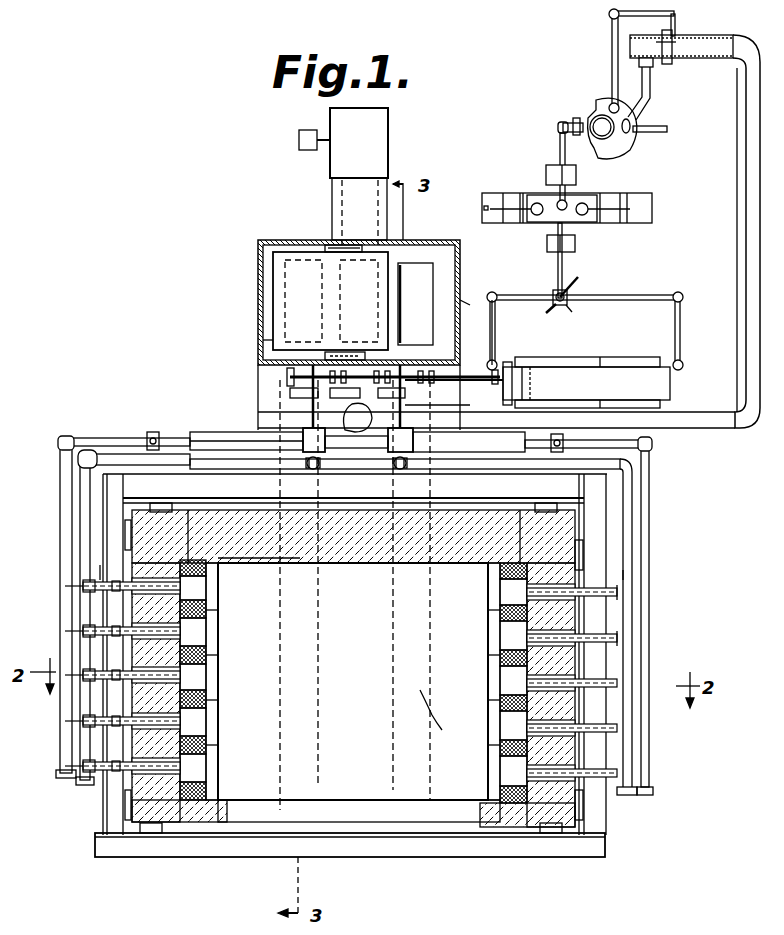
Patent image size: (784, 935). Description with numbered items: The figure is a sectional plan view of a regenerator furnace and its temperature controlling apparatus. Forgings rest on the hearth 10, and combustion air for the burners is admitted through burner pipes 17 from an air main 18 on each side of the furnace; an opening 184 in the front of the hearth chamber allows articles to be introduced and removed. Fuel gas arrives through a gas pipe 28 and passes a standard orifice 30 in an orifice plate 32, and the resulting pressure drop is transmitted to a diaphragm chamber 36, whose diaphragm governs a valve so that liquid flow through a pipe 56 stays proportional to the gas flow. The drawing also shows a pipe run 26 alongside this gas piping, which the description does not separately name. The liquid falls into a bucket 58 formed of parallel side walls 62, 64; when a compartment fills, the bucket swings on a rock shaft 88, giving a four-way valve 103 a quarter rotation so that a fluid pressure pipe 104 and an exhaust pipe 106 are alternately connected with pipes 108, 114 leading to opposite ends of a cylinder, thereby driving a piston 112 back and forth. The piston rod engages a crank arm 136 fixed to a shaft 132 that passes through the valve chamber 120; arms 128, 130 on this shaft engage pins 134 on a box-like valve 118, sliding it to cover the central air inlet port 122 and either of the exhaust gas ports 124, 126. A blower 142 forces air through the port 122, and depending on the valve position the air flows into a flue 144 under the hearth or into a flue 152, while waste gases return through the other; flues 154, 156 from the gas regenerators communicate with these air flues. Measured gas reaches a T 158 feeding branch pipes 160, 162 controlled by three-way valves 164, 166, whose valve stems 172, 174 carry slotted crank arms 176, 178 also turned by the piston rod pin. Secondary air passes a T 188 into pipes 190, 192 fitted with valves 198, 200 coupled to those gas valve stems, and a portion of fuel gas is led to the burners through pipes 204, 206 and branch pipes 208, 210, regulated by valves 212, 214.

The hearth 10 is at (350, 797).
The burner pipes 17 is at (585, 592).
The air main 18 is at (82, 553).
The fuel supply pipe 26 is at (712, 425).
The gas pipe 28 is at (612, 48).
The standard orifice 30 is at (665, 64).
The orifice plate 32 is at (668, 42).
The diaphragm chamber 36 is at (594, 100).
The liquid pipe 56 is at (650, 132).
The bucket 58 is at (652, 210).
The side wall 62 is at (590, 195).
The side wall 64 is at (588, 230).
The rock shaft 88 is at (558, 270).
The four-way valve 103 is at (568, 307).
The fluid pressure pipe 104 is at (576, 283).
The exhaust pipe 106 is at (548, 314).
The pipe 108 is at (645, 297).
The piston 112 is at (526, 375).
The pipe 114 is at (498, 323).
The box-like valve 118 is at (276, 284).
The valve chamber 120 is at (262, 264).
The central air inlet port 122 is at (403, 252).
The exhaust gas port 124 is at (266, 340).
The exhaust gas port 126 is at (432, 288).
The arm 128 is at (345, 320).
The arm 130 is at (348, 245).
The shaft 132 is at (378, 272).
The pins 134 is at (330, 246).
The crank arm 136 is at (348, 398).
The blower 142 is at (388, 138).
The flue 144 is at (320, 680).
The flue 152 is at (445, 718).
The flue 154 is at (488, 565).
The flue 156 is at (268, 555).
The T 158 is at (350, 470).
The branch pipe 160 is at (216, 432).
The branch pipe 162 is at (500, 452).
The three-way valve 164 is at (308, 452).
The three-way valve 166 is at (400, 452).
The valve stem 172 is at (304, 398).
The valve stem 174 is at (405, 407).
The crank arm 176 is at (290, 377).
The crank arm 178 is at (405, 393).
The opening 184 is at (250, 820).
The T 188 is at (320, 552).
The pipe 190 is at (110, 458).
The pipe 192 is at (585, 470).
The valve 198 is at (290, 578).
The valve 200 is at (398, 555).
The pipe 204 is at (82, 435).
The pipe 206 is at (650, 478).
The branch pipe 208 is at (70, 640).
The branch pipe 210 is at (632, 603).
The valve 212 is at (153, 430).
The valve 214 is at (558, 434).